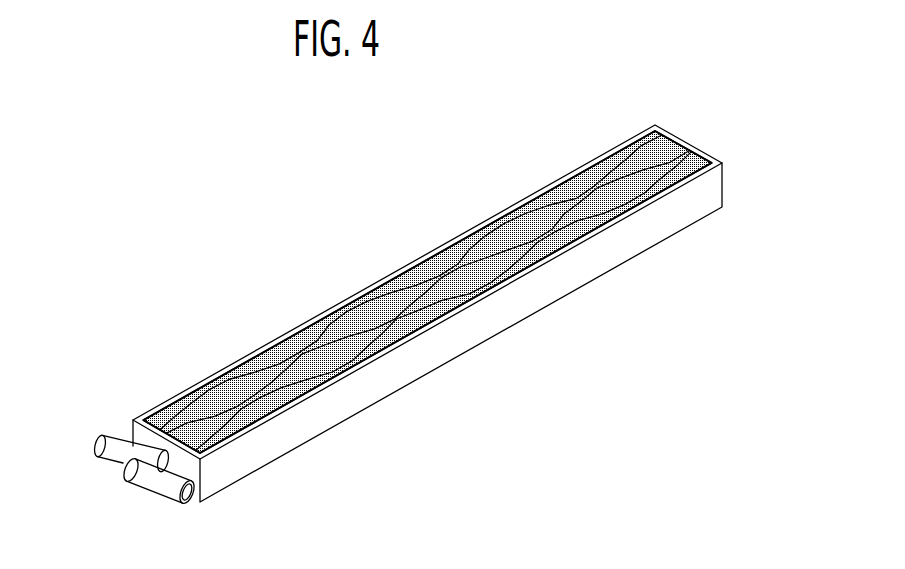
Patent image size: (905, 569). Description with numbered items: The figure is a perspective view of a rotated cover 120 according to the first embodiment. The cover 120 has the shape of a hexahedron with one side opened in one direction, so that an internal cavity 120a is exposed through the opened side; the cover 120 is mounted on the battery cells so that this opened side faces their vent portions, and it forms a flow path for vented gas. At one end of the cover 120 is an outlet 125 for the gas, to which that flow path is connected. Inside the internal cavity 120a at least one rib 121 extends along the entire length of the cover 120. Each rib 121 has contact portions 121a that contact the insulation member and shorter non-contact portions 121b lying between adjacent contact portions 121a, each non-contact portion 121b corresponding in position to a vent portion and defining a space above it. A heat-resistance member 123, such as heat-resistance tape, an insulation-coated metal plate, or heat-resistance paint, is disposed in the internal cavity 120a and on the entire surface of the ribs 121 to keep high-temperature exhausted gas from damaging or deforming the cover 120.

The cover 120 is at (717, 183).
The internal cavity 120a is at (683, 154).
The rib 121 is at (547, 93).
The contact portions 121a is at (542, 189).
The non-contact portions 121b is at (573, 178).
The heat-resistance member 123 is at (483, 223).
The outlet 125 is at (97, 459).